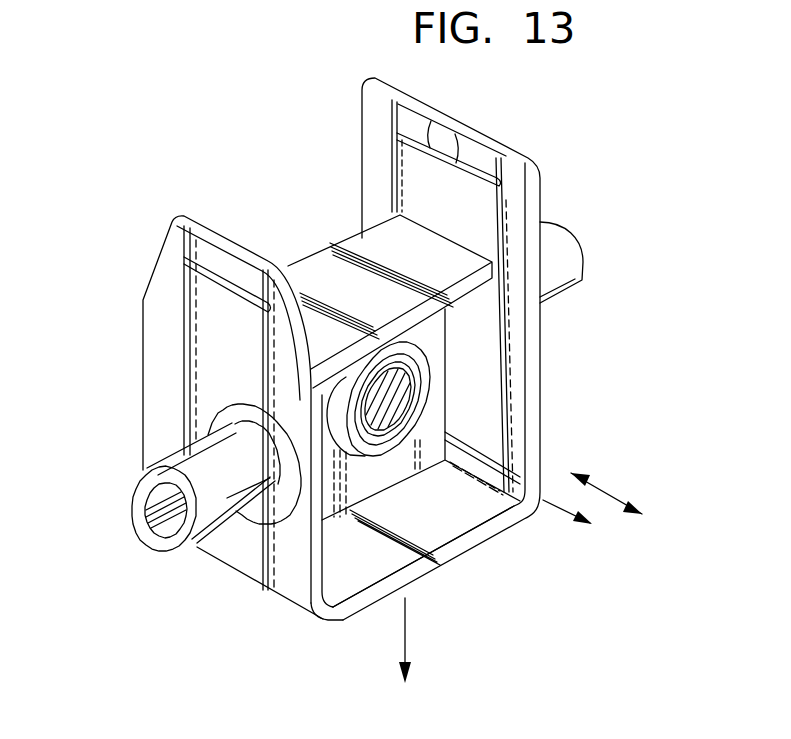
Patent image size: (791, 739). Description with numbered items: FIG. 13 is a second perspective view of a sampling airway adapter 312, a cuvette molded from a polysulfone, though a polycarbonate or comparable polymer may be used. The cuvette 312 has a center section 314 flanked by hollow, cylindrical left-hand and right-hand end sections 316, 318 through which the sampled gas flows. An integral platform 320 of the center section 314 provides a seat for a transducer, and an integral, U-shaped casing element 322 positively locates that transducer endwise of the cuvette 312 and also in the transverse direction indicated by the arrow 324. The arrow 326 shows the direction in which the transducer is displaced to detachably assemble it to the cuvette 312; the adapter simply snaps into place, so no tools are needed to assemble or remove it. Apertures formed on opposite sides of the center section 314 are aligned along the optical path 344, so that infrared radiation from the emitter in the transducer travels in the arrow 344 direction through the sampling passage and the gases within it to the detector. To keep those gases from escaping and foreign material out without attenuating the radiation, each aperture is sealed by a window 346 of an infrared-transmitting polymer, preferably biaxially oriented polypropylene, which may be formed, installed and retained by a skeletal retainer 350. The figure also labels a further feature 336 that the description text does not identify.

The sampling airway adapter 312 is at (300, 112).
The center section 314 is at (405, 491).
The left-hand end section 316 is at (557, 300).
The right-hand end section 318 is at (176, 450).
The integral platform 320 is at (343, 233).
The U-shaped casing element 322 is at (118, 328).
The arrow 324 is at (613, 494).
The arrow 326 is at (405, 645).
The tube bore 336 is at (167, 510).
The optical path 344 is at (560, 502).
The window 346 is at (383, 402).
The skeletal retainer 350 is at (348, 382).